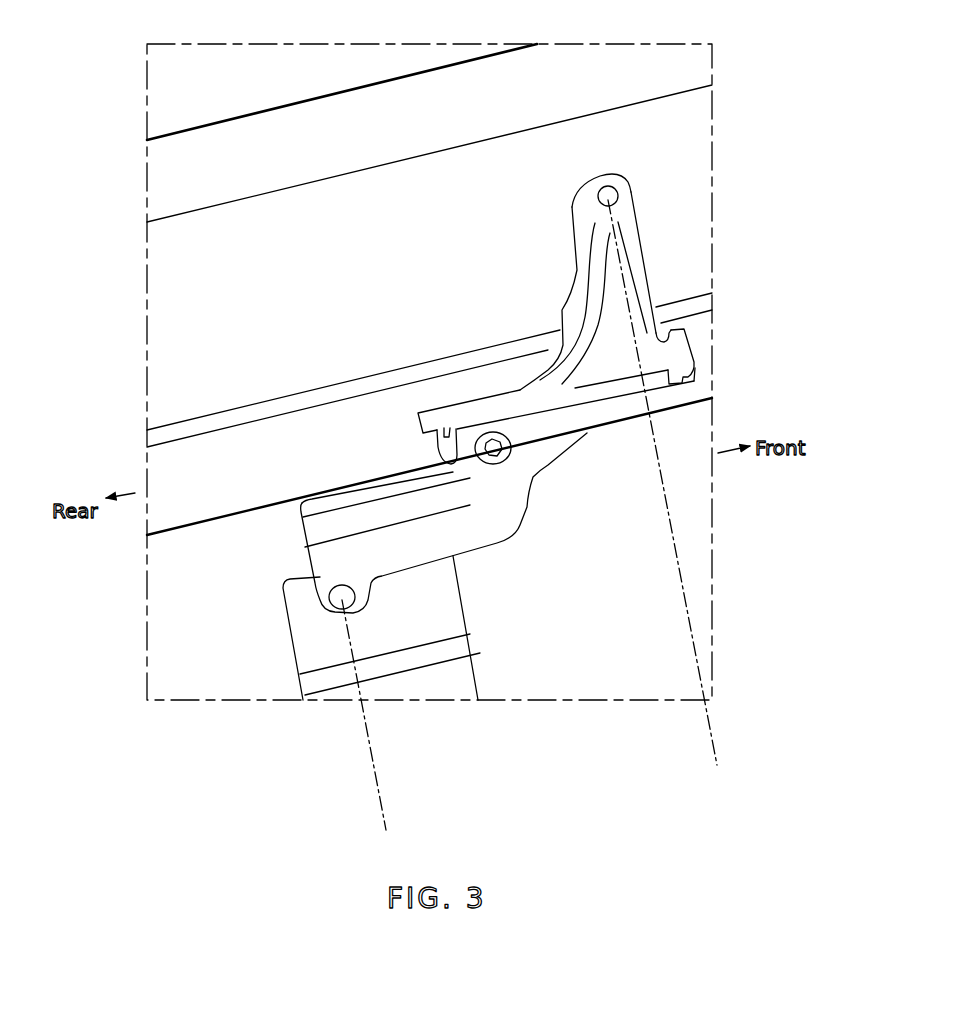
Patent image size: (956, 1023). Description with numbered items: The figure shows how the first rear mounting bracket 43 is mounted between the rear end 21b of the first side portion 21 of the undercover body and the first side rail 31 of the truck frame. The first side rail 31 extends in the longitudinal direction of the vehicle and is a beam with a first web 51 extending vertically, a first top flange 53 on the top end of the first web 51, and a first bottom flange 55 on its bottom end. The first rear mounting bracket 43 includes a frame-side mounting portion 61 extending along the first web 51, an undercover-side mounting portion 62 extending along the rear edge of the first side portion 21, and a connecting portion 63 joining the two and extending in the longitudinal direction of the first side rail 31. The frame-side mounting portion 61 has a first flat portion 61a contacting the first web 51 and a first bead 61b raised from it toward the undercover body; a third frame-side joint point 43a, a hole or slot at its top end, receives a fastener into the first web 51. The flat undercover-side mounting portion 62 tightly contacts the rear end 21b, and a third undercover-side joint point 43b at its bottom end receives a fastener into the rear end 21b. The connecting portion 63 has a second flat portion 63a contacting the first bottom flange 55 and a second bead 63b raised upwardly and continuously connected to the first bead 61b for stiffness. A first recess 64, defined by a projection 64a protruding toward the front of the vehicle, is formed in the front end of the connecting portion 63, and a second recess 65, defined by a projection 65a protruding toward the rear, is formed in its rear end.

The first side portion 21 is at (365, 628).
The rear end of the first side portion 21b is at (280, 608).
The first side rail 31 is at (350, 78).
The first rear mounting bracket 43 is at (476, 266).
The third frame-side joint point 43a is at (620, 190).
The third undercover-side joint point 43b is at (333, 603).
The first web 51 is at (695, 194).
The first top flange 53 is at (524, 78).
The first bottom flange 55 is at (695, 388).
The frame-side mounting portion 61 is at (643, 268).
The first flat portion 61a is at (580, 232).
The first bead 61b is at (633, 260).
The undercover-side mounting portion 62 is at (474, 566).
The connecting portion 63 is at (517, 367).
The second flat portion 63a is at (558, 372).
The second bead 63b is at (591, 379).
The first recess 64 is at (674, 333).
The projection 64a is at (684, 332).
The second recess 65 is at (447, 464).
The projection 65a is at (422, 436).